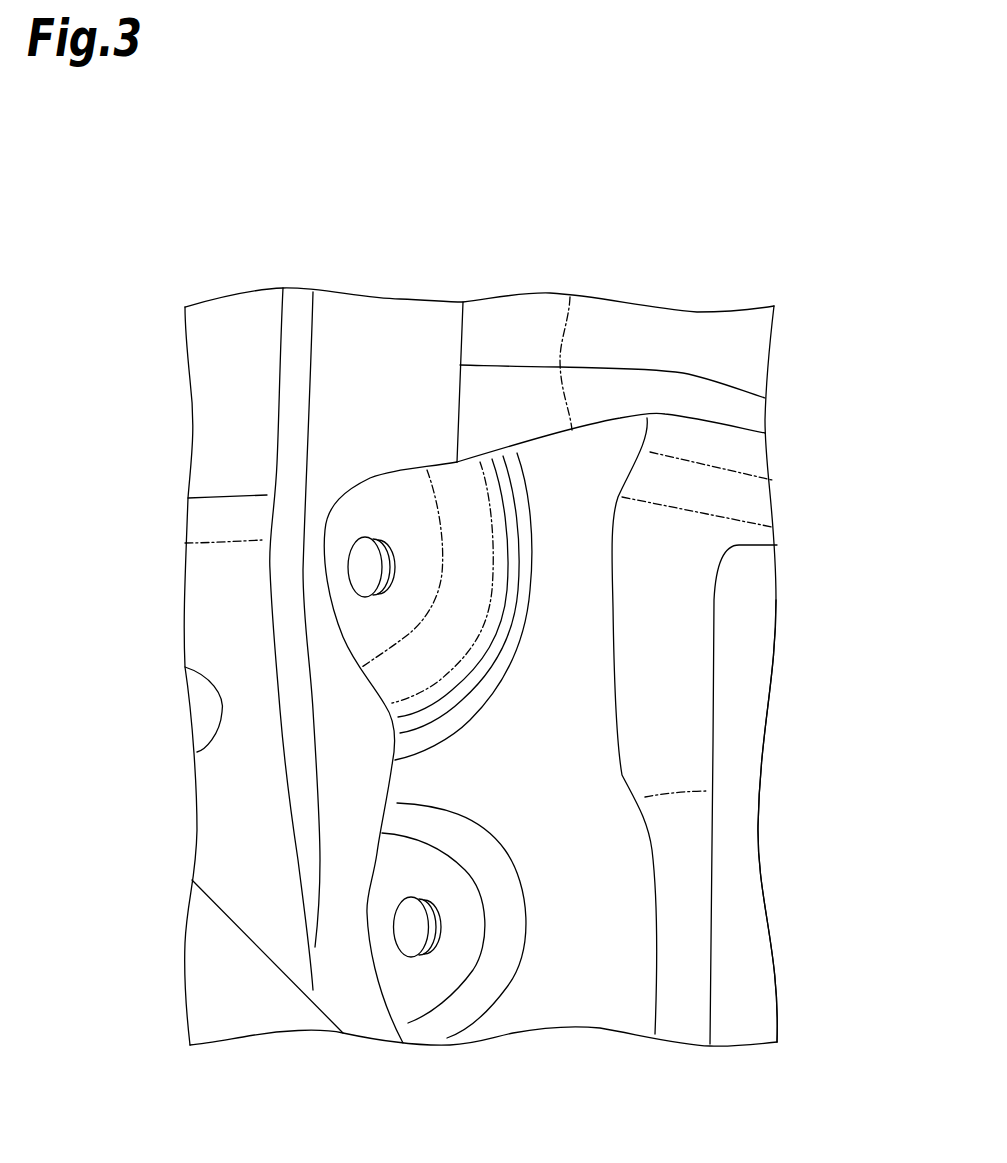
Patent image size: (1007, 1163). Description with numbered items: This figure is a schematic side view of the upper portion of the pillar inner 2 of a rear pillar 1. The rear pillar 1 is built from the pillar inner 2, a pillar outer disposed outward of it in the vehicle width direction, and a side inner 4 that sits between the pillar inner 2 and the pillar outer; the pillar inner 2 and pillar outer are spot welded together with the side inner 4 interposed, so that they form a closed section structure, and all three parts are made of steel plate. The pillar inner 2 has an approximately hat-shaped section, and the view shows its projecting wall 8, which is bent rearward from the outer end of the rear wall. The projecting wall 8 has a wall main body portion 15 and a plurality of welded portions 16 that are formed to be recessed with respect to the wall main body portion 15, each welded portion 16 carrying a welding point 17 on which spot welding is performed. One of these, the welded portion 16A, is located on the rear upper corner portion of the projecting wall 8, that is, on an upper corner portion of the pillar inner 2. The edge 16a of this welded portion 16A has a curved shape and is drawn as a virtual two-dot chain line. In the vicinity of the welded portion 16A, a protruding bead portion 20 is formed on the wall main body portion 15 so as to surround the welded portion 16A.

The rear pillar 1 is at (220, 203).
The pillar inner 2 is at (782, 619).
The side inner 4 is at (393, 320).
The projecting wall 8 is at (570, 297).
The wall main body portion 15 is at (577, 995).
The welded portion 16 is at (400, 992).
The welded portion 16A is at (370, 512).
The edge 16a is at (468, 653).
The welding point 17 is at (362, 567).
The protruding bead portion 20 is at (512, 592).